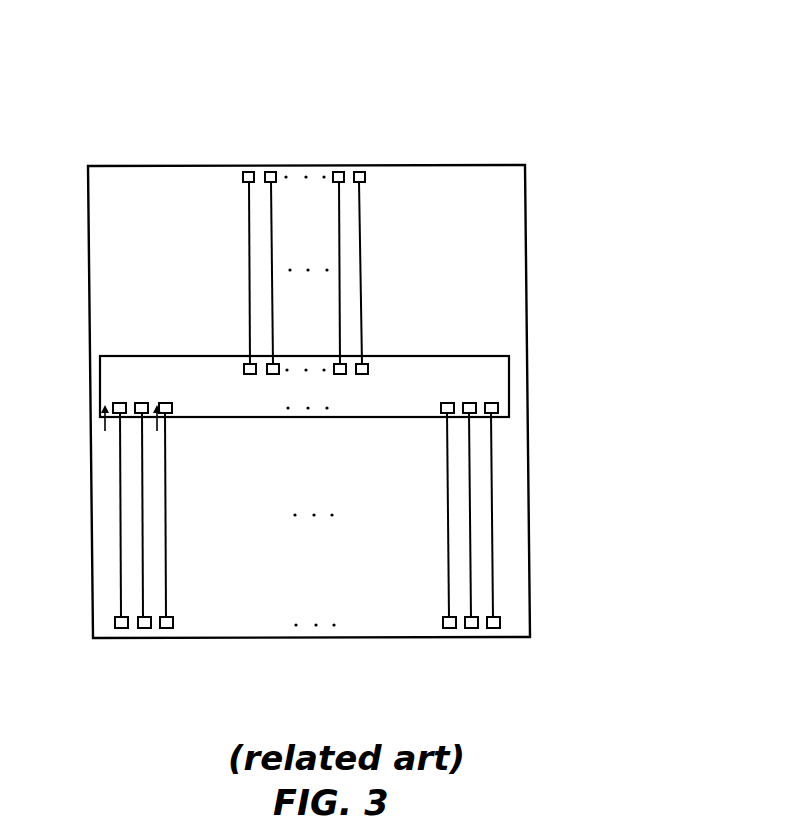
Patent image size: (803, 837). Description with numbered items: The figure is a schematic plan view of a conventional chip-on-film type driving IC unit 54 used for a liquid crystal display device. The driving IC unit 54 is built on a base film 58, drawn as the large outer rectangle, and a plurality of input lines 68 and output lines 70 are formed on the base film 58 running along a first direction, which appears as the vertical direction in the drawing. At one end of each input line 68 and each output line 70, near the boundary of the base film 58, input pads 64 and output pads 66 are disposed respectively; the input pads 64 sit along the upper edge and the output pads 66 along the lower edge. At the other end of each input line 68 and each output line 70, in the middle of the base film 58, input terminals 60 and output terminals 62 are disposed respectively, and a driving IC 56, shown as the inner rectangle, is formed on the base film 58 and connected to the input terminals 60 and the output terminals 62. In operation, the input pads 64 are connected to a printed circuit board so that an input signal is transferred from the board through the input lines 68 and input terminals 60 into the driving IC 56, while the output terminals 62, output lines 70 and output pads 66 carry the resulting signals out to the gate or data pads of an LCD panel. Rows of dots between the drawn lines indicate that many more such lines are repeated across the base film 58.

The driving IC unit 54 is at (580, 114).
The driving IC 56 is at (500, 390).
The base film 58 is at (520, 292).
The input terminals 60 is at (247, 365).
The output terminals 62 is at (113, 409).
The input pads 64 is at (249, 173).
The output pads 66 is at (145, 629).
The input lines 68 is at (250, 262).
The output lines 70 is at (121, 513).